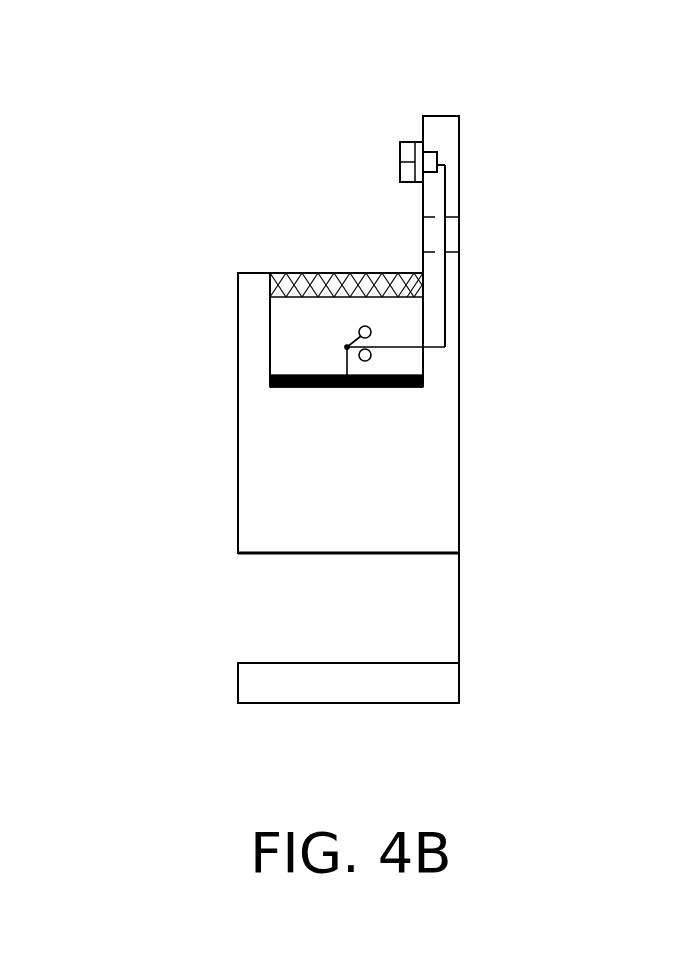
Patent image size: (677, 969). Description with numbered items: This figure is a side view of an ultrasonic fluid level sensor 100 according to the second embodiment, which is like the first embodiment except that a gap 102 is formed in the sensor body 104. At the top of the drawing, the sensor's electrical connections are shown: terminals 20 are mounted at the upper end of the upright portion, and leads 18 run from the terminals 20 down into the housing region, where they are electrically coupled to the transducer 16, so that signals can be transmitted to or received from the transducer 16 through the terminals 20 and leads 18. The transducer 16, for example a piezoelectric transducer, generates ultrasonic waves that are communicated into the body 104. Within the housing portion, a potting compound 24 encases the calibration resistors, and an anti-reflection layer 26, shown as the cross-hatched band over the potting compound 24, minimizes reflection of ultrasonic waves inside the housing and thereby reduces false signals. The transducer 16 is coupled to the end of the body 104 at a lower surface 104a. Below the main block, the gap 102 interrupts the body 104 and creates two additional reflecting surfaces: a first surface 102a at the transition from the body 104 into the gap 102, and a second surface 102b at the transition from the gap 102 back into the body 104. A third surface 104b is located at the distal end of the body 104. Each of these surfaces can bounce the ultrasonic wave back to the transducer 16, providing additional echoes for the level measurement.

The fluid level sensor 100 is at (503, 103).
The leads 18 is at (446, 195).
The terminals 20 is at (413, 142).
The sensor body 104 is at (413, 472).
The potting compound 24 is at (292, 318).
The anti-reflection layer 26 is at (316, 272).
The transducer 16 is at (305, 385).
The bottom surface of cavity 104a is at (370, 388).
The gap 102 is at (427, 607).
The first surface 102a is at (415, 553).
The second surface 102b is at (417, 663).
The third surface 104b is at (283, 703).